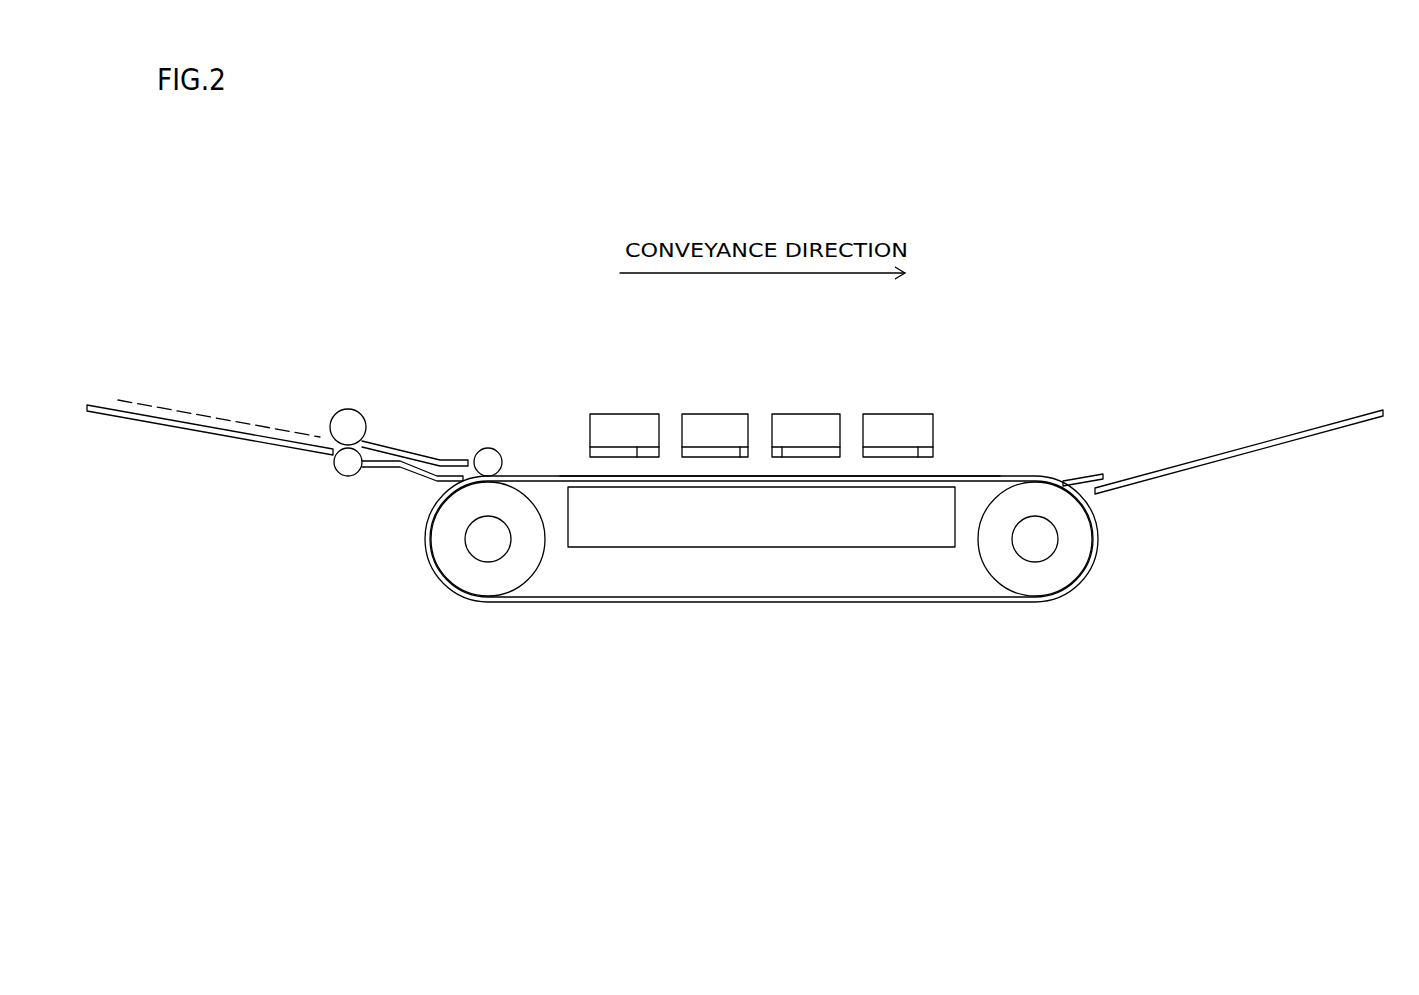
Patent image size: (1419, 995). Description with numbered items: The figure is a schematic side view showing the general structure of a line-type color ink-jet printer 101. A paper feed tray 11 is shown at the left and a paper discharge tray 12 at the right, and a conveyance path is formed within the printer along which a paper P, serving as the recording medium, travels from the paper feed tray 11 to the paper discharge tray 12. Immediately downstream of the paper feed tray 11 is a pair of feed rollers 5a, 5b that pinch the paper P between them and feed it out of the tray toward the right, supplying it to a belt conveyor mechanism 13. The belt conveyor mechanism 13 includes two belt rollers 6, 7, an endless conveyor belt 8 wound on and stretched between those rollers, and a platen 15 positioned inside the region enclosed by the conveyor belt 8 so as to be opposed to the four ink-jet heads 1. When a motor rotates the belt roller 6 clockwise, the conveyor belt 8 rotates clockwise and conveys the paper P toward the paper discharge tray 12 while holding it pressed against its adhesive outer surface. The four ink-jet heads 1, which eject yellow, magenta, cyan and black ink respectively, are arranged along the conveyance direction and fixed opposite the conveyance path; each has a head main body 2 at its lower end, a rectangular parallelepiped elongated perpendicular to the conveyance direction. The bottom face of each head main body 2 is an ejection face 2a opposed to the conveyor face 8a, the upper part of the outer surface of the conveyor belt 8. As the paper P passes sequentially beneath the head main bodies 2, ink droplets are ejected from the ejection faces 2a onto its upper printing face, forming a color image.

The ink-jet printer 101 is at (1172, 325).
The ink-jet head 1 is at (596, 398).
The head main body 2 is at (637, 447).
The ejection face 2a is at (625, 457).
The feed roller 5a is at (348, 430).
The feed roller 5b is at (340, 470).
The belt roller 6 is at (1065, 566).
The belt roller 7 is at (487, 575).
The conveyor belt 8 is at (672, 598).
The conveyor face 8a is at (980, 476).
The paper feed tray 11 is at (216, 398).
The paper discharge tray 12 is at (1301, 412).
The belt conveyor mechanism 13 is at (395, 594).
The platen 15 is at (647, 522).
The paper P is at (118, 398).